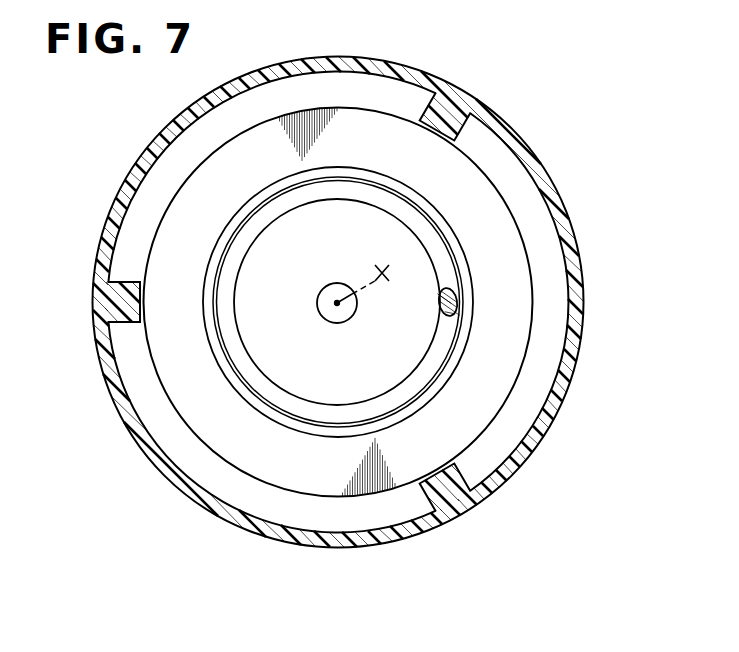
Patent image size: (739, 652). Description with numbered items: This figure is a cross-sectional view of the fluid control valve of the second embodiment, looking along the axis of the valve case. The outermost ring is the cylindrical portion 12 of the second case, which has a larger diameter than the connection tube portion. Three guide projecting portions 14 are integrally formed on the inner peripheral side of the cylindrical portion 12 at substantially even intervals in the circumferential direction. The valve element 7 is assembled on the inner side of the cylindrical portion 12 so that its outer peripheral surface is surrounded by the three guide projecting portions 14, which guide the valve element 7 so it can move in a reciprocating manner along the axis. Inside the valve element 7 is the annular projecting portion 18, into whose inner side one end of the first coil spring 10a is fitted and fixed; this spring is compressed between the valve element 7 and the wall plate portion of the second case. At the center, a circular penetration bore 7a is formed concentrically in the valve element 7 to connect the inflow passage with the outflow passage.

The cylindrical portion 12 is at (541, 176).
The guide projecting portions 14 is at (124, 293).
The valve element 7 is at (517, 364).
The penetration bore 7a is at (333, 316).
The first coil spring 10a is at (430, 365).
The annular projecting portion 18 is at (468, 300).